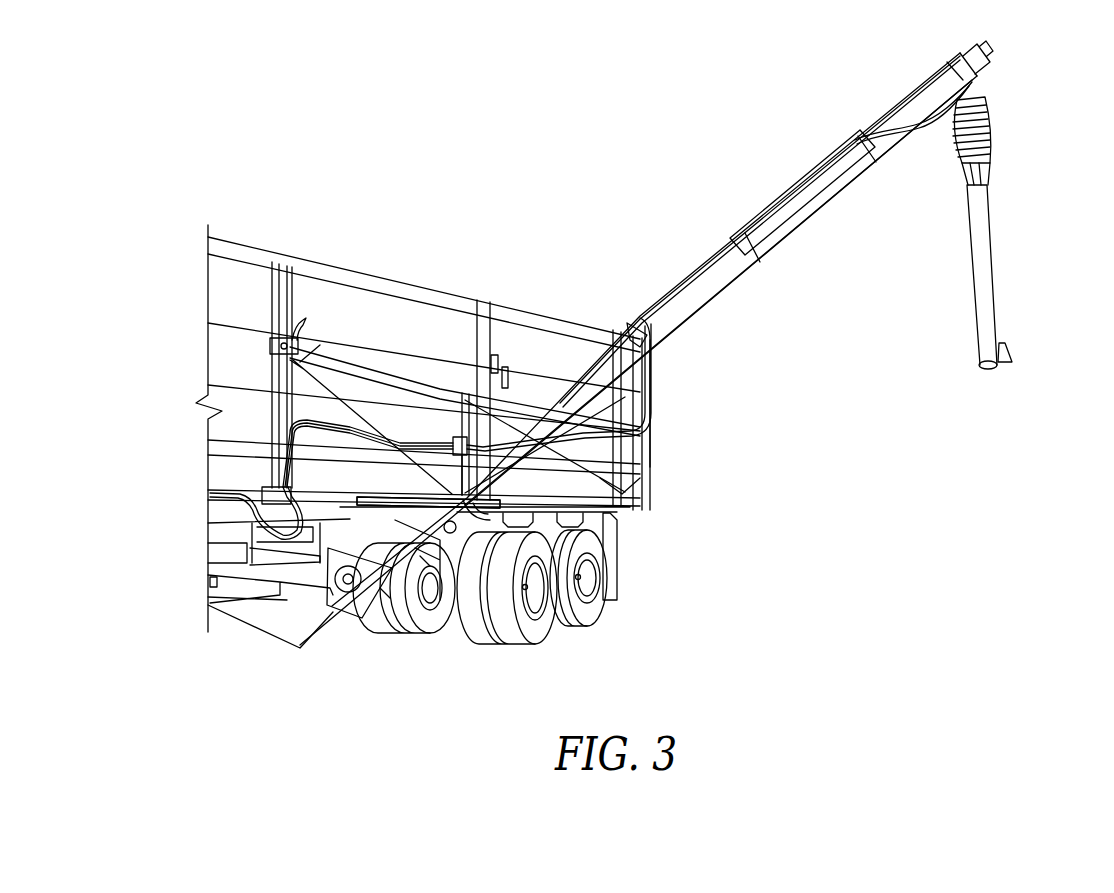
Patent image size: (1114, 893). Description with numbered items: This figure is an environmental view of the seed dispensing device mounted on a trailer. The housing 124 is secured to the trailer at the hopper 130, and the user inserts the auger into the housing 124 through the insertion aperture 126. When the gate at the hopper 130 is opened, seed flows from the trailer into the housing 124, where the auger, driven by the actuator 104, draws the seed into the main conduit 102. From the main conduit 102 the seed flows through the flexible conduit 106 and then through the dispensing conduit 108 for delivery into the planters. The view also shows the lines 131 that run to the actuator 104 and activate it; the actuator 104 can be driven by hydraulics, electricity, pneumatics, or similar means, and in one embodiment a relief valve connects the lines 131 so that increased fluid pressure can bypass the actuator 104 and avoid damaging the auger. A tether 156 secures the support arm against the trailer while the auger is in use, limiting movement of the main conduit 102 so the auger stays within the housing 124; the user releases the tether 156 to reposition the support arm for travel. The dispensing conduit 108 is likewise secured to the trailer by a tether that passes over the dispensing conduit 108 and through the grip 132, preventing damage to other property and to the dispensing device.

The main conduit 102 is at (712, 272).
The actuator 104 is at (973, 52).
The flexible conduit 106 is at (984, 126).
The dispensing conduit 108 is at (985, 243).
The housing 124 is at (286, 635).
The insertion aperture 126 is at (345, 625).
The hopper 130 is at (240, 578).
The lines 131 is at (885, 124).
The grip 132 is at (1012, 352).
The tether 156 is at (373, 505).